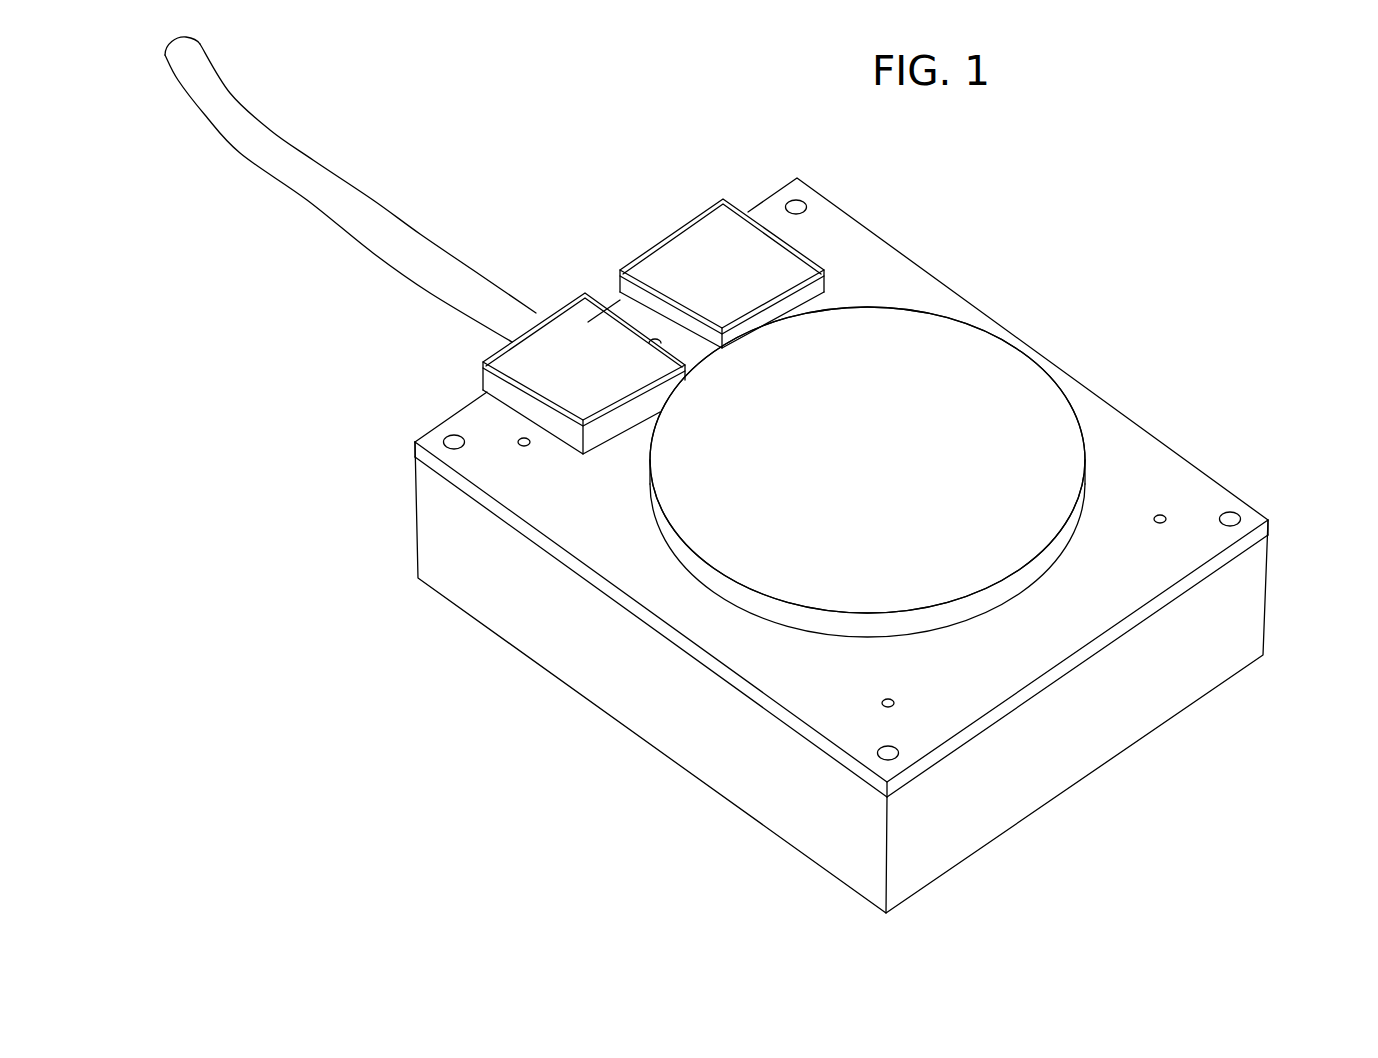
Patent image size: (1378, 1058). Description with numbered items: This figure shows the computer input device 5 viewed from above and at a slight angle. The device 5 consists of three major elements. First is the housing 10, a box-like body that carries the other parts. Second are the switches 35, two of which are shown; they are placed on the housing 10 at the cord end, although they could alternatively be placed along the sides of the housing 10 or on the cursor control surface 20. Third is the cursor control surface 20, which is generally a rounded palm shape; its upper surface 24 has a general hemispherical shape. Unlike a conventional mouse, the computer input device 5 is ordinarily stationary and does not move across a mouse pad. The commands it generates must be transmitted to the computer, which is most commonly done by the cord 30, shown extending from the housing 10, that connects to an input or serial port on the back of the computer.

The computer input device 5 is at (1268, 520).
The housing 10 is at (1240, 685).
The cursor control surface 20 is at (1087, 493).
The upper surface 24 is at (990, 383).
The cord 30 is at (332, 208).
The switches 35 is at (677, 271).